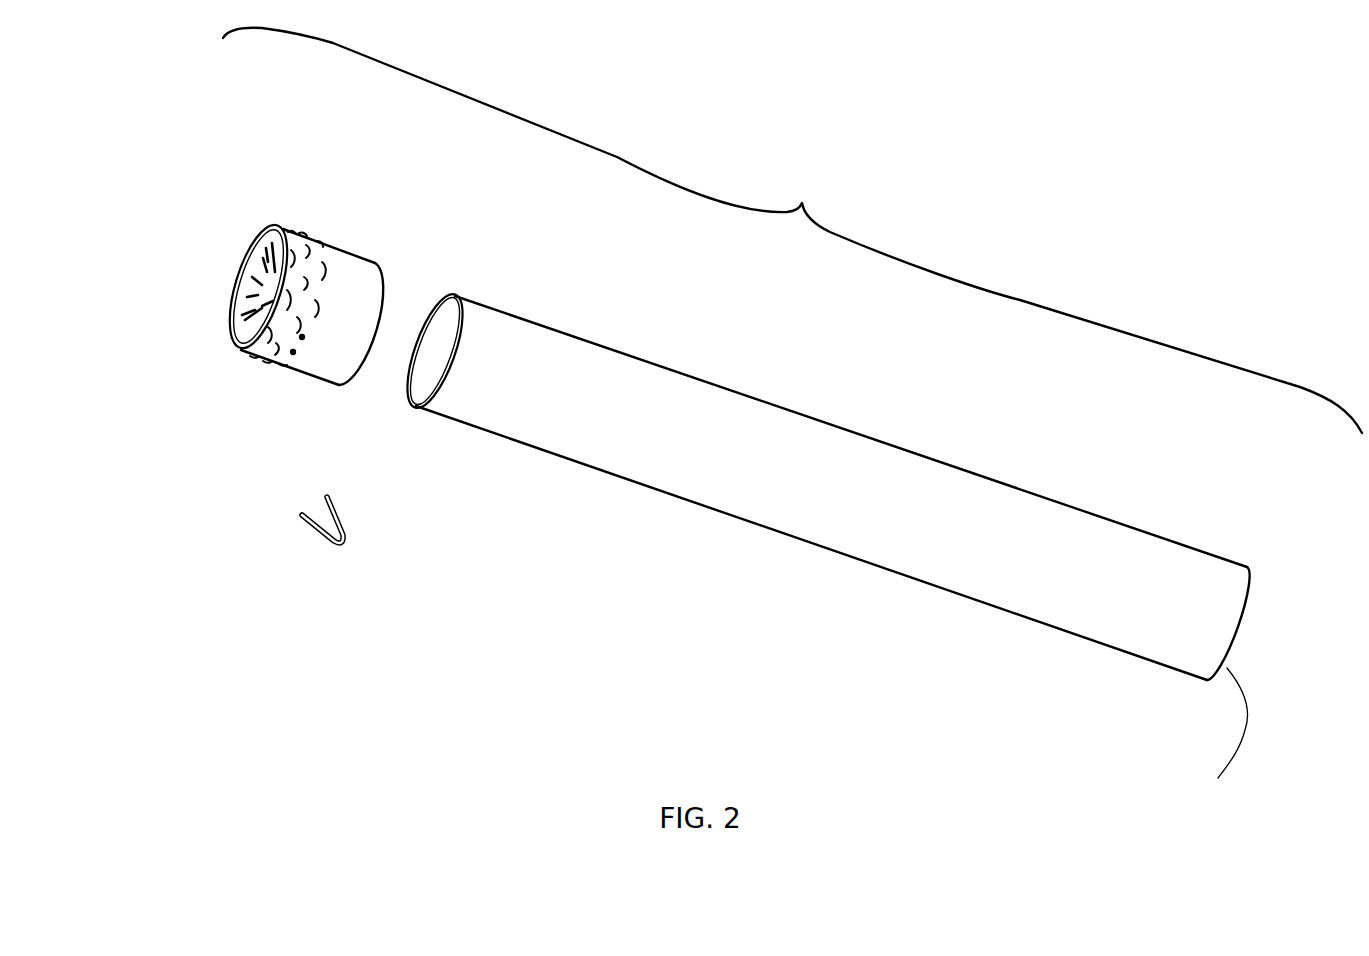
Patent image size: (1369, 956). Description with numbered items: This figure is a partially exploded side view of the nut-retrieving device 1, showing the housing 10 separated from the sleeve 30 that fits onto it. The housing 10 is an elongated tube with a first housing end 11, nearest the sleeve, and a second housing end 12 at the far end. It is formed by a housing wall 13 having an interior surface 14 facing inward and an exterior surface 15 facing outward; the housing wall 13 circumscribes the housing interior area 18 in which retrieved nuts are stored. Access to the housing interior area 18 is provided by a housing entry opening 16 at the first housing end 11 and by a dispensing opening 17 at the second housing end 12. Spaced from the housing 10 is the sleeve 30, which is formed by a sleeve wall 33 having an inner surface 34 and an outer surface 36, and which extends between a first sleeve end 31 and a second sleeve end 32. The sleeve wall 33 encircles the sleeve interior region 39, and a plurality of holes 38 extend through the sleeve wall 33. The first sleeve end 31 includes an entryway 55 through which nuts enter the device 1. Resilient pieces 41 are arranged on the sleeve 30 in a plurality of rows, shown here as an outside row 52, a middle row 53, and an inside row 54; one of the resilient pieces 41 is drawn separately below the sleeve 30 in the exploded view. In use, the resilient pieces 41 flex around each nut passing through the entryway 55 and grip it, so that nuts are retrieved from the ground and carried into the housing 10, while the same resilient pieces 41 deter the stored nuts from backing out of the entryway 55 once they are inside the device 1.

The device 1 is at (792, 230).
The housing 10 is at (798, 486).
The first housing end 11 is at (490, 358).
The second housing end 12 is at (1238, 628).
The housing wall 13 is at (445, 382).
The interior surface 14 is at (435, 357).
The exterior surface 15 is at (902, 525).
The housing entry opening 16 is at (410, 390).
The dispensing opening 17 is at (1217, 742).
The housing interior area 18 is at (441, 313).
The sleeve 30 is at (279, 332).
The first sleeve end 31 is at (283, 228).
The second sleeve end 32 is at (368, 255).
The sleeve wall 33 is at (262, 238).
The inner surface 34 is at (257, 267).
The outer surface 36 is at (322, 345).
The holes 38 is at (302, 337).
The sleeve interior region 39 is at (240, 338).
The resilient pieces 41 is at (314, 530).
The outside row 52 is at (254, 355).
The middle row 53 is at (267, 362).
The inside row 54 is at (282, 372).
The entryway 55 is at (242, 297).